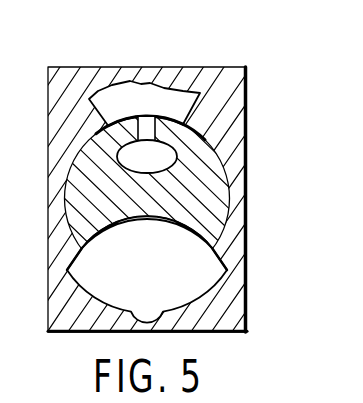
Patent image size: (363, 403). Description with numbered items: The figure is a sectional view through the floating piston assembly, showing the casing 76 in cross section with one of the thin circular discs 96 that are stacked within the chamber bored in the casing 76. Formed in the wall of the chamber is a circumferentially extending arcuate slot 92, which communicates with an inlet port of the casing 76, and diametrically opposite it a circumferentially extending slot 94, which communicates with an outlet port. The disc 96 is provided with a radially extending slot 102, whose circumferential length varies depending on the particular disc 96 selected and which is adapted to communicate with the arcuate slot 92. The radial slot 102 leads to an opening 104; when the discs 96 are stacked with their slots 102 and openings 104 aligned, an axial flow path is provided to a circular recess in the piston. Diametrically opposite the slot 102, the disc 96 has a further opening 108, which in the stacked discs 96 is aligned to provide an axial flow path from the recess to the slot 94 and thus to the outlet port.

The casing 76 is at (236, 302).
The arcuate slot 92 is at (155, 92).
The slot 94 is at (165, 302).
The circular disc 96 is at (216, 194).
The radially extending slot 102 is at (145, 127).
The opening 104 is at (161, 167).
The opening 108 is at (168, 255).